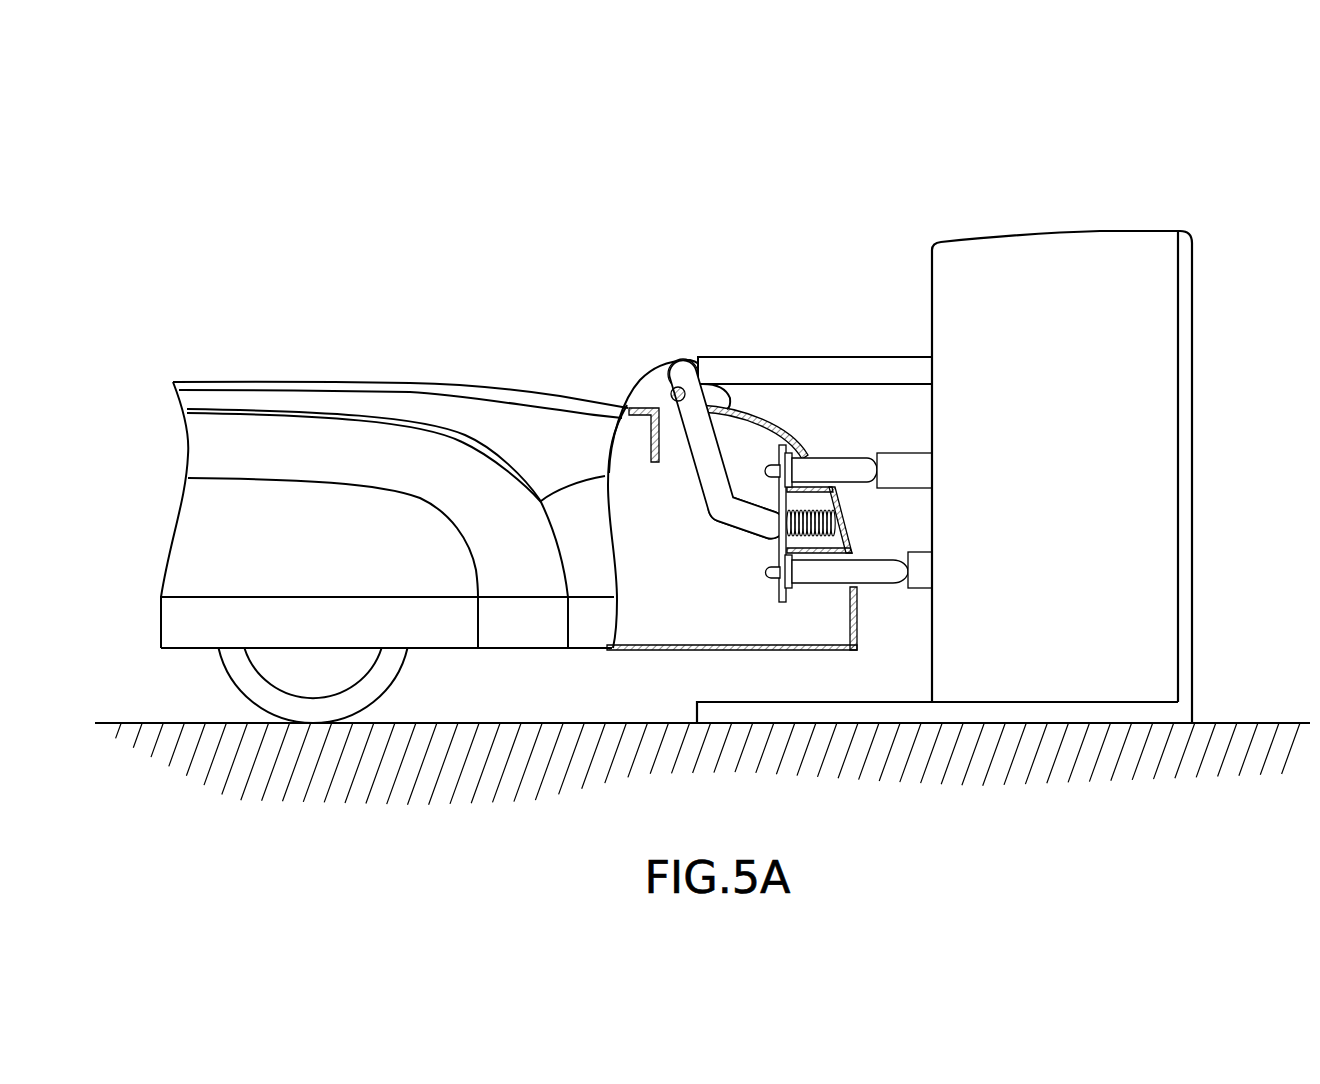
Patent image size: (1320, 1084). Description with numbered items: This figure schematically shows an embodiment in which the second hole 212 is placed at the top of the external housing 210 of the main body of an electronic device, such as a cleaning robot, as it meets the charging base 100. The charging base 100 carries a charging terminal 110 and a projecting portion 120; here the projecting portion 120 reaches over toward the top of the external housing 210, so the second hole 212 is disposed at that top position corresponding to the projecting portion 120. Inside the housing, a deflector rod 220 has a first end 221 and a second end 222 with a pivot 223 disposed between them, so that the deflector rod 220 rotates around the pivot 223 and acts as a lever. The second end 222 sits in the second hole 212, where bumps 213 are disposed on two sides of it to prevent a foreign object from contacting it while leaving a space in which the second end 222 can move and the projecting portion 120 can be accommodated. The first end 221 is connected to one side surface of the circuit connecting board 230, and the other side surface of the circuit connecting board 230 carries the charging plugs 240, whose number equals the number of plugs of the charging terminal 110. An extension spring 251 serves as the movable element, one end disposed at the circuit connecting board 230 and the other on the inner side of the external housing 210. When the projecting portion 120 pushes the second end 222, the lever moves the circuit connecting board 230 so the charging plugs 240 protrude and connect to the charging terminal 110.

The charging base 100 is at (1128, 224).
The charging terminal 110 is at (905, 460).
The projecting portion 120 is at (847, 370).
The external housing 210 is at (211, 376).
The second hole 212 is at (654, 406).
The bumps 213 is at (648, 383).
The deflector rod 220 is at (700, 444).
The first end 221 is at (760, 528).
The second end 222 is at (688, 369).
The pivot 223 is at (667, 387).
The circuit connecting board 230 is at (781, 590).
The charging plug 240 is at (830, 467).
The extension spring 251 is at (843, 518).